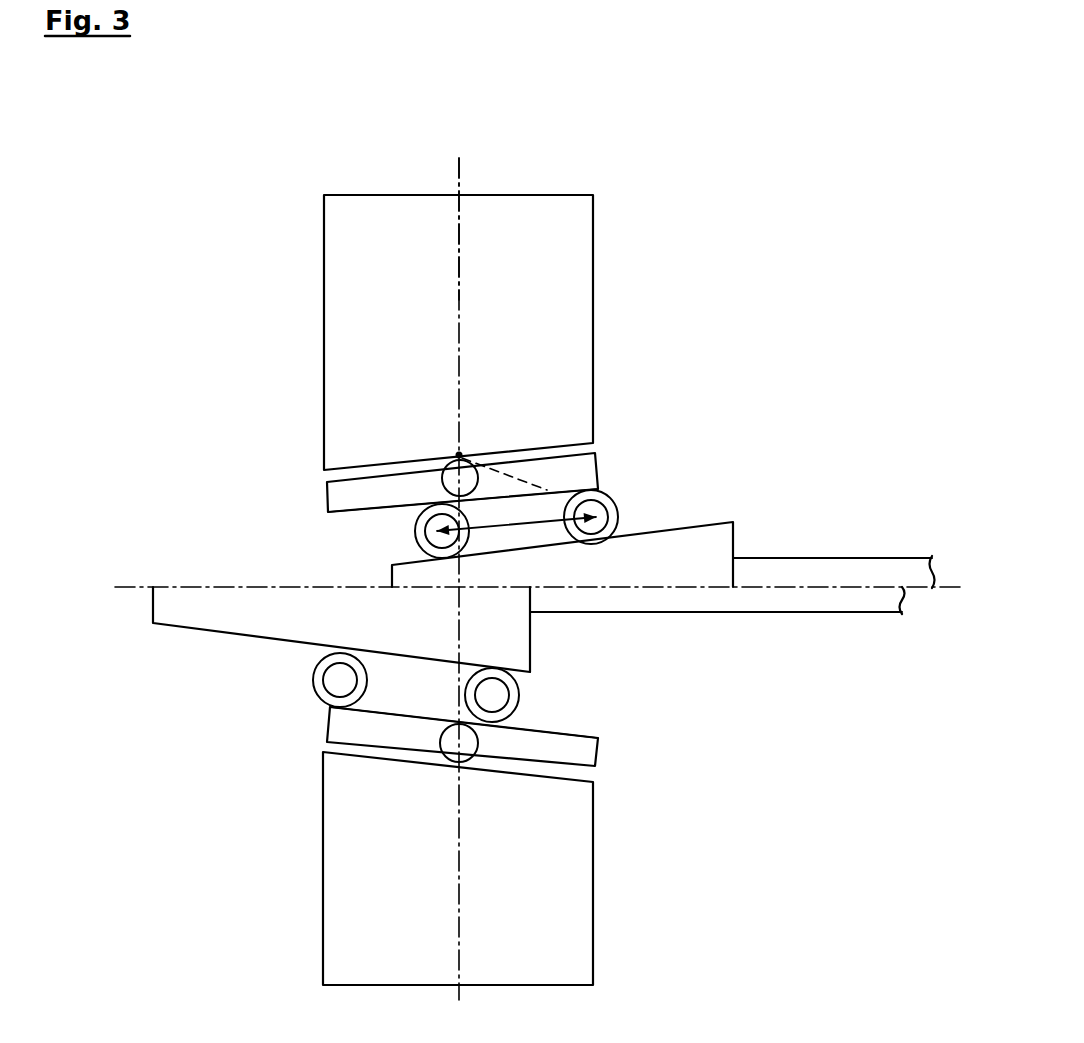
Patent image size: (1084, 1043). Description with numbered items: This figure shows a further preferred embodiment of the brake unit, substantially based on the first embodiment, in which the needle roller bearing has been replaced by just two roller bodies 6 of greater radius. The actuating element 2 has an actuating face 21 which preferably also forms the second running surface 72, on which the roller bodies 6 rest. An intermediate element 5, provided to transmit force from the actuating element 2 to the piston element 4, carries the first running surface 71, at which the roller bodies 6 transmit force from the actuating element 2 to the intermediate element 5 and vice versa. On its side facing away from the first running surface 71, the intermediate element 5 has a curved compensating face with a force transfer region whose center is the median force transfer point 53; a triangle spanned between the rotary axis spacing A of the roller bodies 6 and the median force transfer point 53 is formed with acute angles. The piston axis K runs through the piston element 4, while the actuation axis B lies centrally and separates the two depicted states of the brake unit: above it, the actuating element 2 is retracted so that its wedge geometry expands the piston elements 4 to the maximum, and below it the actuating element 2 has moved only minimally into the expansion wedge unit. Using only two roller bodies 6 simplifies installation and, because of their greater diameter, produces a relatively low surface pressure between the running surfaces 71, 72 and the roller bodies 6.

The actuating element 2 is at (708, 538).
The actuating face 21 is at (247, 640).
The piston element 4 is at (666, 65).
The intermediate element 5 is at (207, 337).
The median force transfer point 53 is at (459, 453).
The roller bodies 6 is at (724, 634).
The first running surface 71 is at (128, 464).
The second running surface 72 is at (650, 530).
The piston axis K is at (458, 257).
The rotary axis spacing A is at (538, 523).
The actuation axis B is at (820, 592).